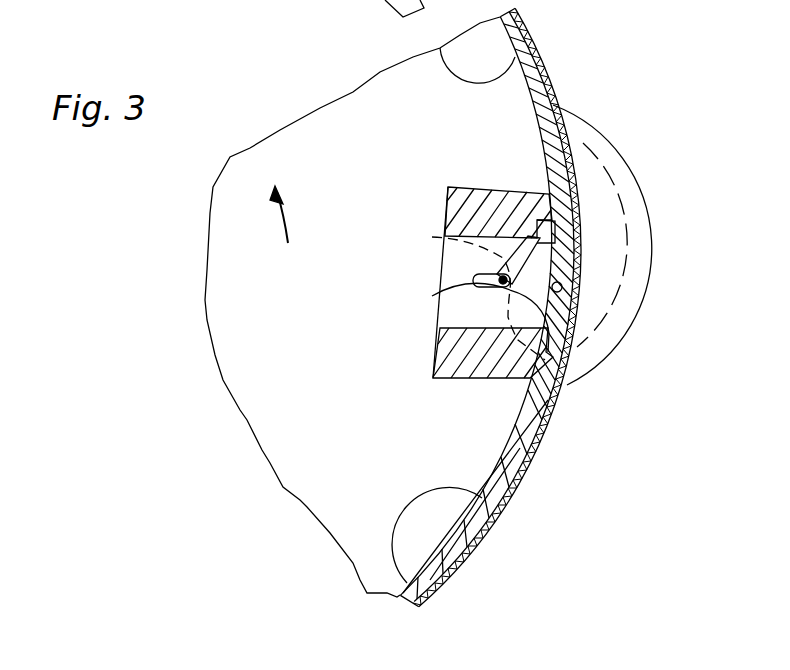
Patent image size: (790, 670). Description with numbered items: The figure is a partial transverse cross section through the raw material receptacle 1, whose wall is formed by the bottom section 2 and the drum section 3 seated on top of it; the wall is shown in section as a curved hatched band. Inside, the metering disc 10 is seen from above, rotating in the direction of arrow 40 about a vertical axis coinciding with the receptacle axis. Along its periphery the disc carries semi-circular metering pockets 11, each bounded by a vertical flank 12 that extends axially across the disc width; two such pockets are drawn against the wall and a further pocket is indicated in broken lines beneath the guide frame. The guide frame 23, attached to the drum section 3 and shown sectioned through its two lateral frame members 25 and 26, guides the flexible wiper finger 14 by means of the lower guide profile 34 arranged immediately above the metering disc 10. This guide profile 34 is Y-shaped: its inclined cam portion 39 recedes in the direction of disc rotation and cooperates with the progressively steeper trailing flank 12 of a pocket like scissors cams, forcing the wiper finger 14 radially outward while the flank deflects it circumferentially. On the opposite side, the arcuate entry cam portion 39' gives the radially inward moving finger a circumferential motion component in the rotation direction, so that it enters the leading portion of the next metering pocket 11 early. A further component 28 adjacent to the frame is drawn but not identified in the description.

The raw material receptacle 1 is at (555, 90).
The bottom section 2 is at (618, 172).
The drum section 3 is at (527, 478).
The metering disc 10 is at (276, 333).
The metering pocket 11 is at (461, 52).
The flank 12 is at (483, 82).
The wiper finger 14 is at (473, 277).
The guide frame 23 is at (446, 198).
The lateral frame member 25 is at (486, 372).
The lateral frame member 26 is at (500, 207).
The dome 28 is at (452, 306).
The lower guide profile 34 is at (440, 295).
The cam portion 39 is at (621, 237).
The entry cam portion 39' is at (614, 330).
The arrow 40 is at (282, 221).